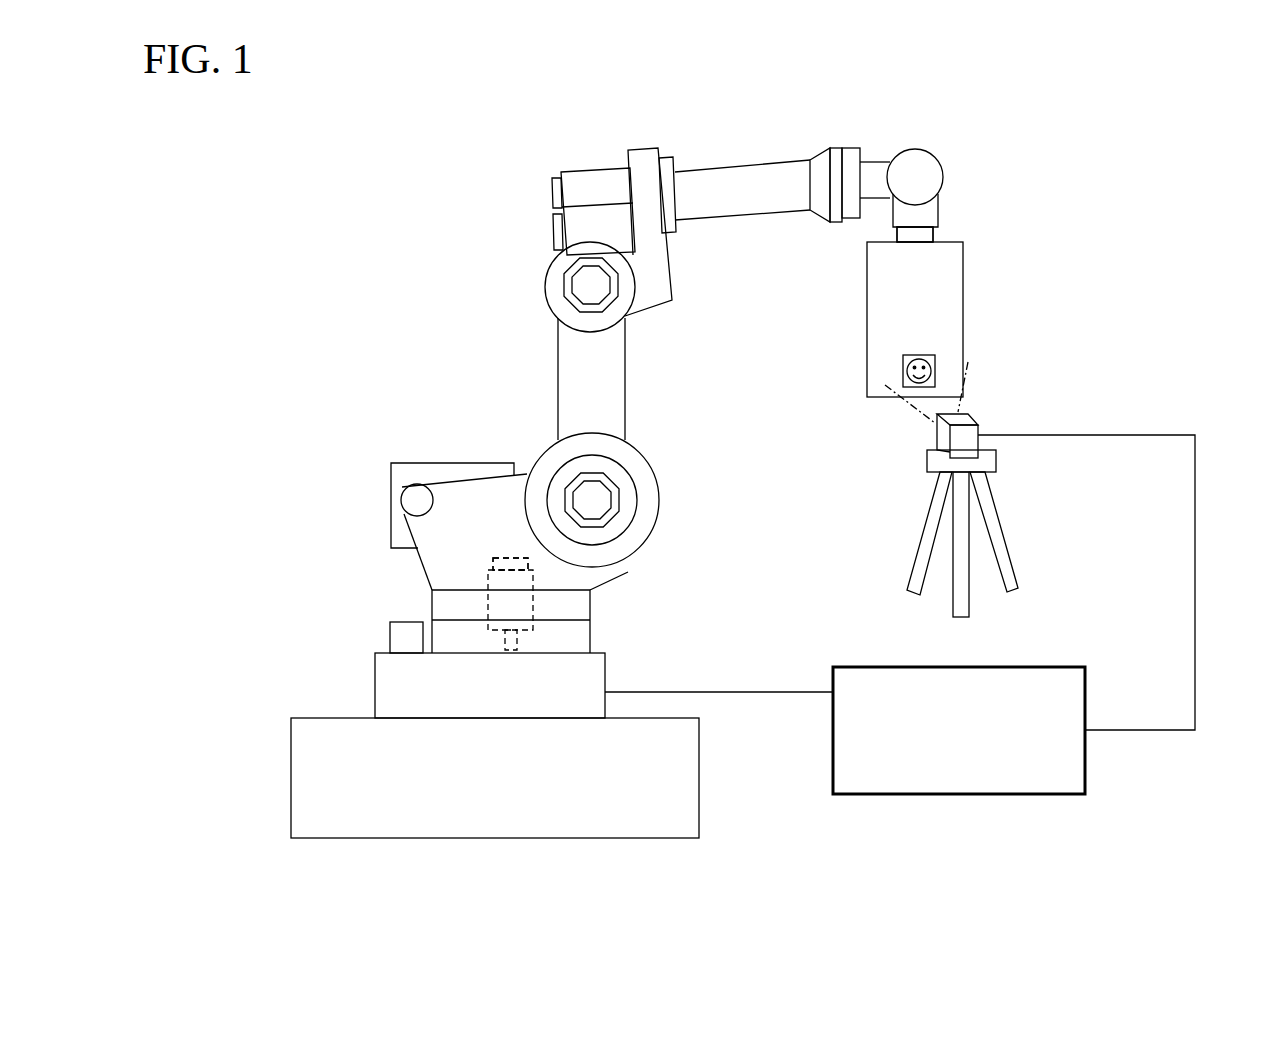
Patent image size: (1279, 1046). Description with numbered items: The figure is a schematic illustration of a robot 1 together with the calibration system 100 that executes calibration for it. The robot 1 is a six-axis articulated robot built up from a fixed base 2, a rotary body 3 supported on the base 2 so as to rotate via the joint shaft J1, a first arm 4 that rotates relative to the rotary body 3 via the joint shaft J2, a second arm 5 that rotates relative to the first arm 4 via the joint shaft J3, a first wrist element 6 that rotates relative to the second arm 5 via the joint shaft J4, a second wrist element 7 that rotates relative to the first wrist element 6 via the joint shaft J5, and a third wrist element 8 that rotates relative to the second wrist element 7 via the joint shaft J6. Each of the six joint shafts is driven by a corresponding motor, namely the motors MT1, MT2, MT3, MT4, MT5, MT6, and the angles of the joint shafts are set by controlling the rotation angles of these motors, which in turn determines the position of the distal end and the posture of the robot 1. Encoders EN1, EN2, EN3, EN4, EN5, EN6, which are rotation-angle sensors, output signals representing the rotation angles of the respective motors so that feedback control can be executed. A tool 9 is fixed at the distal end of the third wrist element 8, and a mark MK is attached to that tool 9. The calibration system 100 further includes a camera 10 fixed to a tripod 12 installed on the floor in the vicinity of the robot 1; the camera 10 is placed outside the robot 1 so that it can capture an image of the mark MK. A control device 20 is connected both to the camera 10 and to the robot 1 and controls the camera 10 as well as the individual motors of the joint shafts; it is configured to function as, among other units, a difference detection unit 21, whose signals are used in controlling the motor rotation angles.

The robot 1 is at (340, 180).
The base 2 is at (375, 683).
The rotary body 3 is at (440, 463).
The first arm 4 is at (558, 380).
The second arm 5 is at (668, 302).
The first wrist element 6 is at (845, 148).
The second wrist element 7 is at (890, 212).
The third wrist element 8 is at (918, 235).
The tool 9 is at (867, 308).
The camera 10 is at (975, 420).
The tripod 12 is at (995, 517).
The control device 20 is at (959, 776).
The difference detection unit 21 is at (955, 794).
The calibration system 100 is at (1108, 385).
The mark MK is at (925, 356).
The joint shaft J1 is at (508, 626).
The joint shaft J2 is at (672, 448).
The joint shaft J3 is at (643, 316).
The joint shaft J4 is at (717, 241).
The joint shaft J5 is at (921, 131).
The joint shaft J6 is at (929, 246).
The motor MT1 is at (488, 600).
The motor MT2 is at (610, 478).
The motor MT3 is at (620, 283).
The motor MT4 is at (522, 208).
The motor MT5 is at (590, 205).
The motor MT6 is at (600, 168).
The encoder EN1 is at (500, 558).
The encoder EN2 is at (574, 480).
The encoder EN3 is at (575, 285).
The encoder EN4 is at (481, 238).
The encoder EN5 is at (556, 237).
The encoder EN6 is at (552, 193).